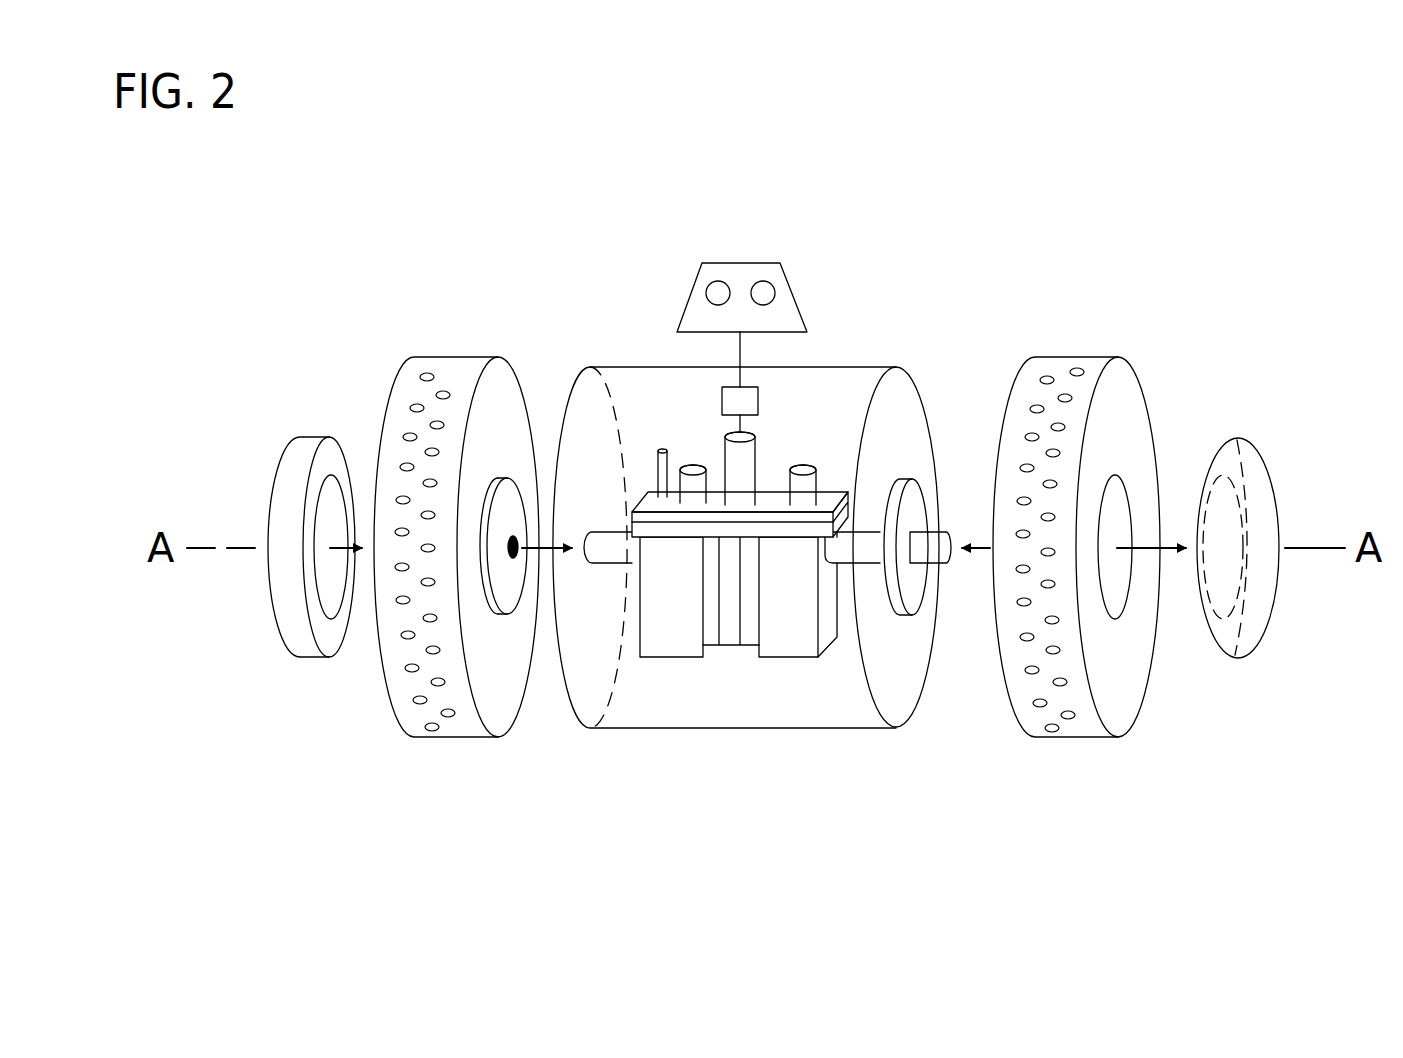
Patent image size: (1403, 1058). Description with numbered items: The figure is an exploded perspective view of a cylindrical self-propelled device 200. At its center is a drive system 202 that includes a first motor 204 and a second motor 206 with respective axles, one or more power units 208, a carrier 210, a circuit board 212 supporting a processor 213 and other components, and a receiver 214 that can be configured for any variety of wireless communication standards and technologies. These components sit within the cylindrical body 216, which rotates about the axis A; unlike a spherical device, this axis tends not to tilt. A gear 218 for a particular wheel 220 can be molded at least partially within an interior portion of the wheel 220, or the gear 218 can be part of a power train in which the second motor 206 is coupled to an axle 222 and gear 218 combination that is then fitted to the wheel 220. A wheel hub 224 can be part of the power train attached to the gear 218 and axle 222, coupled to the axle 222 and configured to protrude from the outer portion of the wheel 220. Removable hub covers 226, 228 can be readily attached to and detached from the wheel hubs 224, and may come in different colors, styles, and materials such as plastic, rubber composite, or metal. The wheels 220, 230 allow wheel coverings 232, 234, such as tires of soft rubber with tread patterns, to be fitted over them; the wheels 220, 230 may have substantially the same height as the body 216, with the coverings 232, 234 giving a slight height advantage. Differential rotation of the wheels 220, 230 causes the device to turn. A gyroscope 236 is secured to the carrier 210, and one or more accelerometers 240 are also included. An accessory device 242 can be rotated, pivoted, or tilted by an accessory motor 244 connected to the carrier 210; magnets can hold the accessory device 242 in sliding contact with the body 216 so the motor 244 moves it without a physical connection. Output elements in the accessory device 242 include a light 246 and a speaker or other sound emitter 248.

The cylindrical self-propelled device 200 is at (546, 280).
The drive system 202 is at (719, 707).
The first motor 204 is at (668, 657).
The second motor 206 is at (798, 656).
The power units 208 is at (715, 645).
The carrier 210 is at (708, 580).
The circuit board 212 is at (650, 505).
The processor 213 is at (662, 530).
The receiver 214 is at (648, 452).
The body 216 is at (880, 367).
The gear 218 is at (903, 618).
The wheel 220 is at (1102, 507).
The axle 222 is at (846, 565).
The wheel hub 224 is at (955, 583).
The hub cover 226 is at (1245, 641).
The hub cover 228 is at (293, 626).
The wheel 230 is at (432, 516).
The wheel covering 232 is at (1057, 357).
The wheel covering 234 is at (416, 388).
The gyroscope 236 is at (752, 446).
The accelerometers 240 is at (692, 467).
The accessory device 242 is at (784, 312).
The accessory motor 244 is at (759, 398).
The light 246 is at (763, 281).
The sound emitter 248 is at (721, 281).